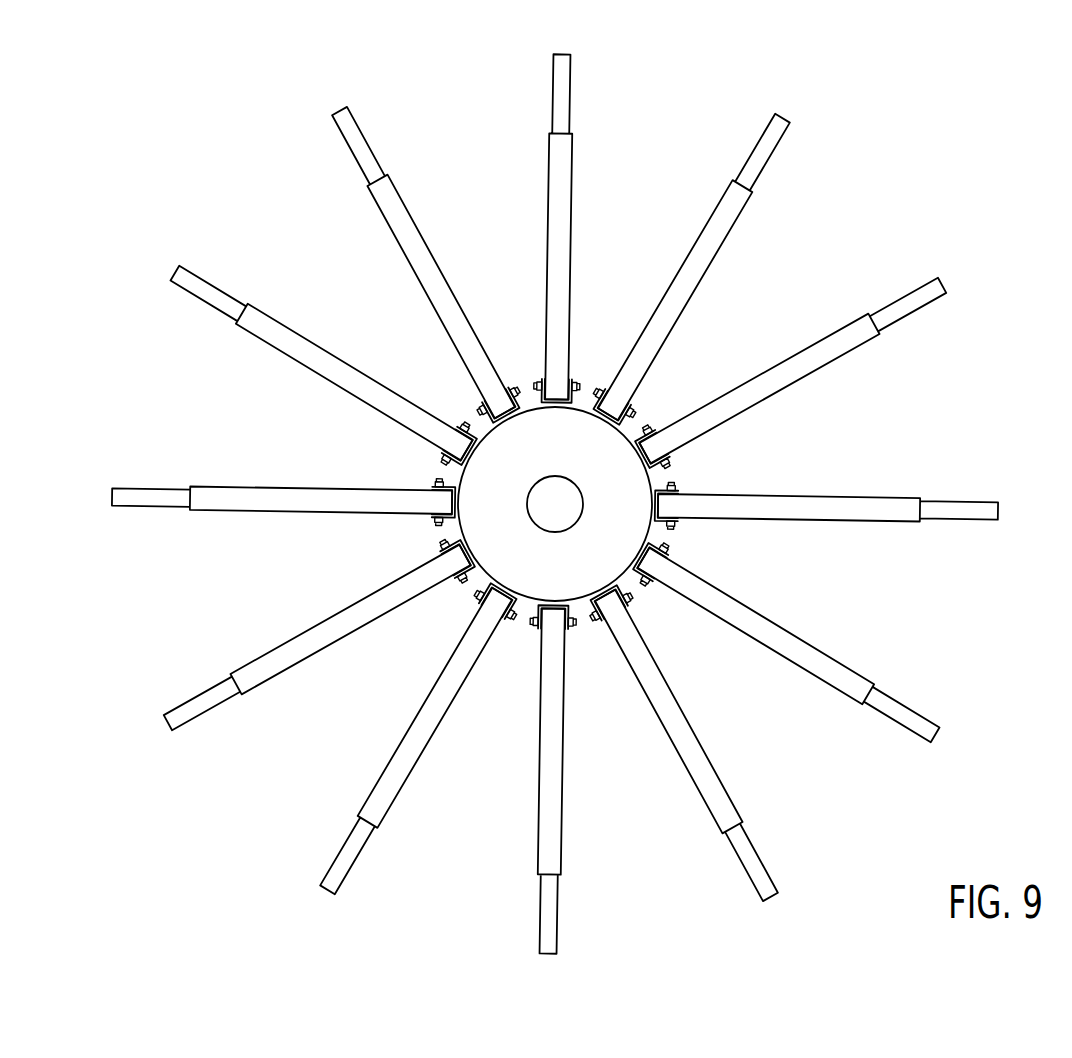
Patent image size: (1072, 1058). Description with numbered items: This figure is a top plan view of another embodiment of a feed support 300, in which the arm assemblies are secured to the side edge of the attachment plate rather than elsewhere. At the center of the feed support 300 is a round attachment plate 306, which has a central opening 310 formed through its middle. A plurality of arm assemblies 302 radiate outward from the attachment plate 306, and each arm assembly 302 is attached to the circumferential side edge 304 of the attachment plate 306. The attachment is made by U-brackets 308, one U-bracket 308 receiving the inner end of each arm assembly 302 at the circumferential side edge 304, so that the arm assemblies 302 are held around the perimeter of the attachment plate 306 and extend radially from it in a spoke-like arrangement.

The feed support 300 is at (893, 145).
The arm assembly 302 is at (546, 211).
The circumferential side edge 304 is at (466, 432).
The attachment plate 306 is at (535, 423).
The U-bracket 308 is at (575, 384).
The central opening 310 is at (574, 490).